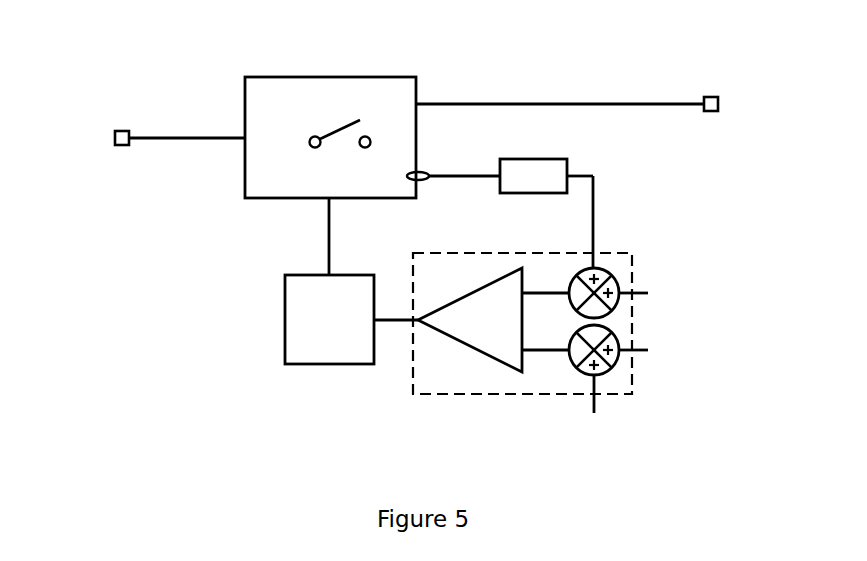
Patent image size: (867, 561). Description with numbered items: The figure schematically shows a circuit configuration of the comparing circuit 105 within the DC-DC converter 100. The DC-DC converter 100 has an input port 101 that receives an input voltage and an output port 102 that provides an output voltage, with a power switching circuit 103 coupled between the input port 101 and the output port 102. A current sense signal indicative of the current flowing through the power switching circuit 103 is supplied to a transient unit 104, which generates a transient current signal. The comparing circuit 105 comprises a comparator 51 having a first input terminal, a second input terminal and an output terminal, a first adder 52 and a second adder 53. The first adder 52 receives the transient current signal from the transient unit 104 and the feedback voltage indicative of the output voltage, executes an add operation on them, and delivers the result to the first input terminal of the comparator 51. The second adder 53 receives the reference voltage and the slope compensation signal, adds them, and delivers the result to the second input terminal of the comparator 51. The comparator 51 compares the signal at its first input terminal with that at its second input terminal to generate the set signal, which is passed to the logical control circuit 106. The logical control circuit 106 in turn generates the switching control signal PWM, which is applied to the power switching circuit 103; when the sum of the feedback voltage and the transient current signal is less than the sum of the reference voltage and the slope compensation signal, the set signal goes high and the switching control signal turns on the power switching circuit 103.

The DC-DC converter 100 is at (126, 70).
The input port 101 is at (127, 150).
The output port 102 is at (727, 141).
The power switching circuit 103 is at (300, 113).
The transient unit 104 is at (533, 176).
The comparing circuit 105 is at (466, 383).
The logical control circuit 106 is at (329, 319).
The comparator 51 is at (470, 320).
The first adder 52 is at (579, 298).
The second adder 53 is at (579, 357).